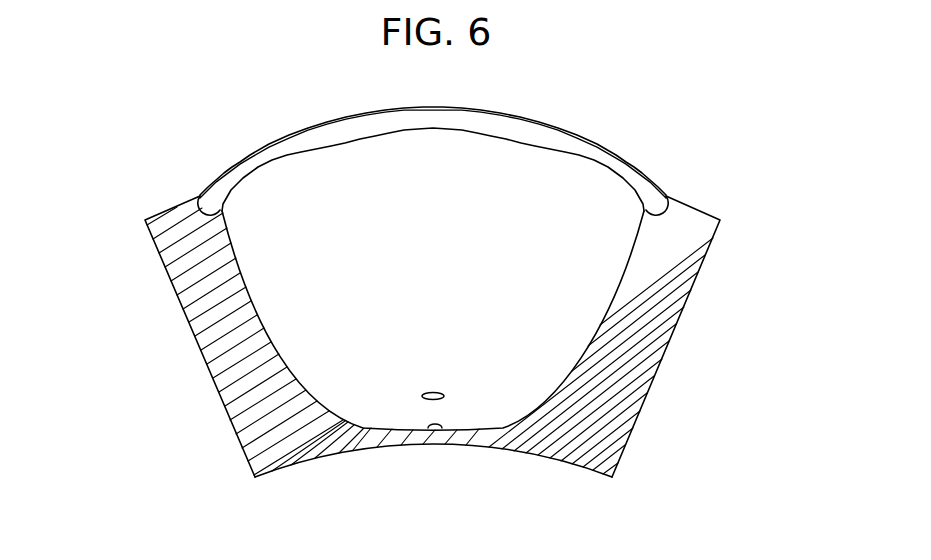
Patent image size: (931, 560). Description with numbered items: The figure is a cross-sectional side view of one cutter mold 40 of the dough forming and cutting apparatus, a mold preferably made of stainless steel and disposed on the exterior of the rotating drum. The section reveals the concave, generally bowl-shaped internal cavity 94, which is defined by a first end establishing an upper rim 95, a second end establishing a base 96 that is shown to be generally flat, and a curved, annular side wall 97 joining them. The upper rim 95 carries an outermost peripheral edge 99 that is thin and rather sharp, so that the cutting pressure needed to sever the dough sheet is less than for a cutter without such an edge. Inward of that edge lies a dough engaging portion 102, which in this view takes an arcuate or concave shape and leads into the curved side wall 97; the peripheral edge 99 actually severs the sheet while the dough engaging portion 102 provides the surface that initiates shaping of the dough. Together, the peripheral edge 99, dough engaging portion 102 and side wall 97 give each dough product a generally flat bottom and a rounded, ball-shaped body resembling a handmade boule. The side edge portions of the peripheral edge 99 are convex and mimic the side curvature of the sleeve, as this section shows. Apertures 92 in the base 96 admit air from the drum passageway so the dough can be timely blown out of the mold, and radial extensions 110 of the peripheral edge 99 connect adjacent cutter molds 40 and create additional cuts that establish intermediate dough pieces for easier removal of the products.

The cutter mold 40 is at (578, 85).
The aperture 92 is at (422, 390).
The internal cavity 94 is at (327, 325).
The upper rim 95 is at (631, 154).
The base 96 is at (443, 431).
The side wall 97 is at (425, 152).
The peripheral edge 99 is at (287, 137).
The dough engaging portion 102 is at (213, 192).
The radial extension 110 is at (148, 213).